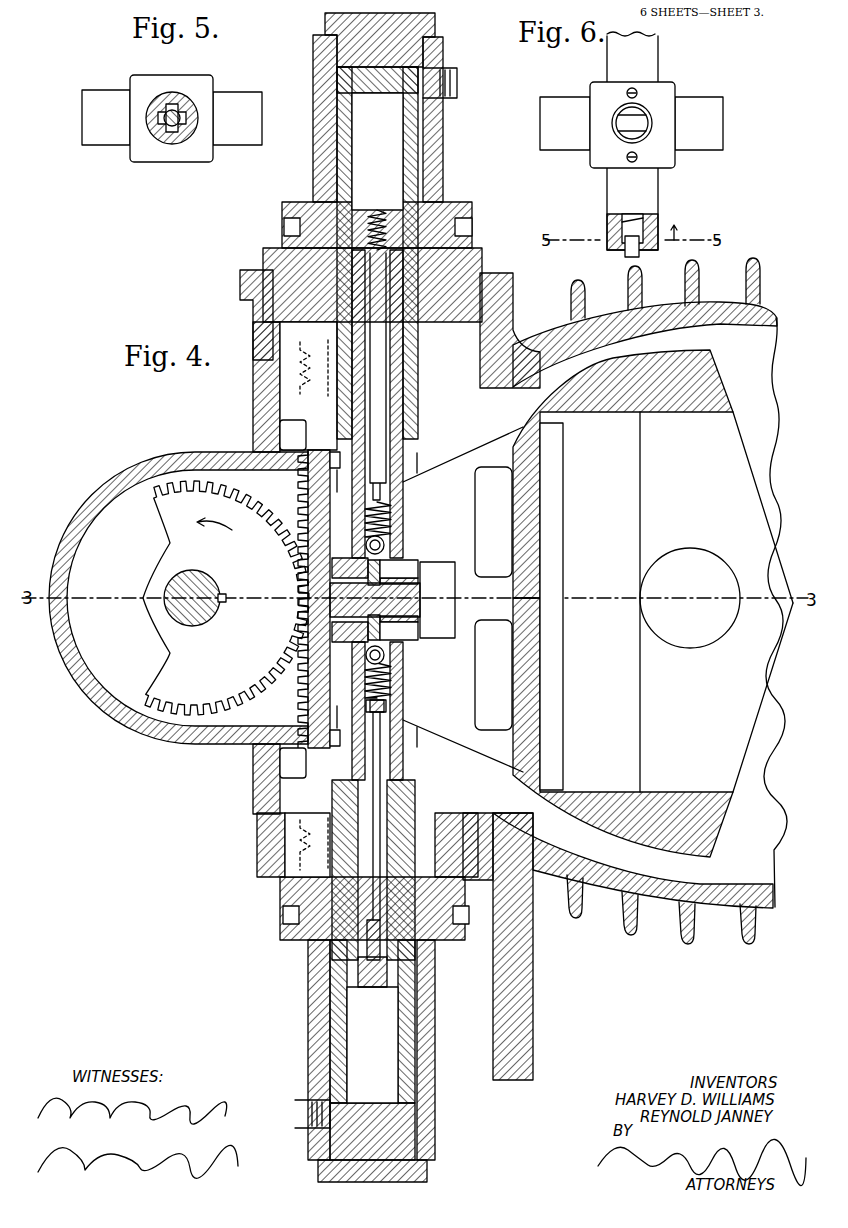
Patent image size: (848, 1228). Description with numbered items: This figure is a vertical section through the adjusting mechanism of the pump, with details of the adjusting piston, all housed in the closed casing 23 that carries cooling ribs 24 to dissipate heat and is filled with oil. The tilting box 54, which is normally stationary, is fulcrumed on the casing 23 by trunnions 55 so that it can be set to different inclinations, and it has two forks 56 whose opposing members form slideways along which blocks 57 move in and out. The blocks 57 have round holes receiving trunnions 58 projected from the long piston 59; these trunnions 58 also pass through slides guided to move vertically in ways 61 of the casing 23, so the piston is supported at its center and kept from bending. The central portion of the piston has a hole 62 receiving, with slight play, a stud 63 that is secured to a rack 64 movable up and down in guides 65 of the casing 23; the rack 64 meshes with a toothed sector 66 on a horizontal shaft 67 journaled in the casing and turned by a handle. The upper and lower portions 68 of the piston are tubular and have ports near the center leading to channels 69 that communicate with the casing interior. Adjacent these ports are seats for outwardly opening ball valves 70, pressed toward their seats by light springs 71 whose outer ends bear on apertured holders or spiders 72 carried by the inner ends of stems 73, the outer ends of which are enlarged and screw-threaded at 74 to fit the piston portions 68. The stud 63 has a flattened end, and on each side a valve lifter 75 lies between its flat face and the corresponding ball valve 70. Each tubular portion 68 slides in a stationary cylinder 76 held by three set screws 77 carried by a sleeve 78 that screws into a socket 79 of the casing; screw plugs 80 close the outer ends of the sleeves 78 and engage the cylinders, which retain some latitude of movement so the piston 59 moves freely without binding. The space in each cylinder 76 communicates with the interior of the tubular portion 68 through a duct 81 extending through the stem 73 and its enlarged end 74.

In FIG. 4, the closed casing or shell 23 is at (733, 914).
In FIG. 4, the cooling ribs 24 is at (628, 936).
In FIG. 4, the tilting box 54 is at (678, 792).
In FIG. 4, the trunnions 55 is at (690, 598).
In FIG. 4, the forks 56 is at (470, 470).
In FIG. 4, the blocks 57 is at (421, 606).
In FIG. 5, the trunnions 58 is at (172, 117).
In FIG. 6, the trunnions 58 is at (631, 123).
In FIG. 5, the long piston 59 is at (205, 82).
In FIG. 6, the long piston 59 is at (672, 90).
In FIG. 4, the long piston 59 is at (305, 682).
In FIG. 4, the ways 61 is at (420, 766).
In FIG. 4, the hole 62 is at (428, 575).
In FIG. 6, the stud 63 is at (642, 126).
In FIG. 4, the stud 63 is at (437, 600).
In FIG. 4, the rack 64 is at (310, 450).
In FIG. 4, the guides 65 is at (300, 470).
In FIG. 4, the toothed sector 66 is at (179, 598).
In FIG. 4, the horizontal shaft 67 is at (197, 626).
In FIG. 5, the tubular piston portions 68 is at (163, 136).
In FIG. 6, the tubular piston portions 68 is at (655, 62).
In FIG. 4, the tubular piston portions 68 is at (406, 444).
In FIG. 6, the channels 69 is at (628, 92).
In FIG. 4, the channels 69 is at (400, 565).
In FIG. 4, the ball valves 70 is at (388, 662).
In FIG. 4, the springs 71 is at (393, 512).
In FIG. 5, the apertured holders or spiders 72 is at (160, 100).
In FIG. 6, the apertured holders or spiders 72 is at (660, 226).
In FIG. 4, the apertured holders or spiders 72 is at (393, 708).
In FIG. 5, the pins or stems 73 is at (178, 130).
In FIG. 6, the pins or stems 73 is at (628, 252).
In FIG. 4, the pins or stems 73 is at (382, 797).
In FIG. 4, the enlarged screw-threaded end 74 is at (385, 210).
In FIG. 4, the pin member or valve lifter 75 is at (350, 558).
In FIG. 4, the stationary cylinder 76 is at (418, 124).
In FIG. 4, the set screws 77 is at (457, 84).
In FIG. 4, the sleeve 78 is at (438, 50).
In FIG. 4, the sockets 79 is at (250, 306).
In FIG. 4, the screw plugs 80 is at (330, 33).
In FIG. 4, the duct 81 is at (282, 245).